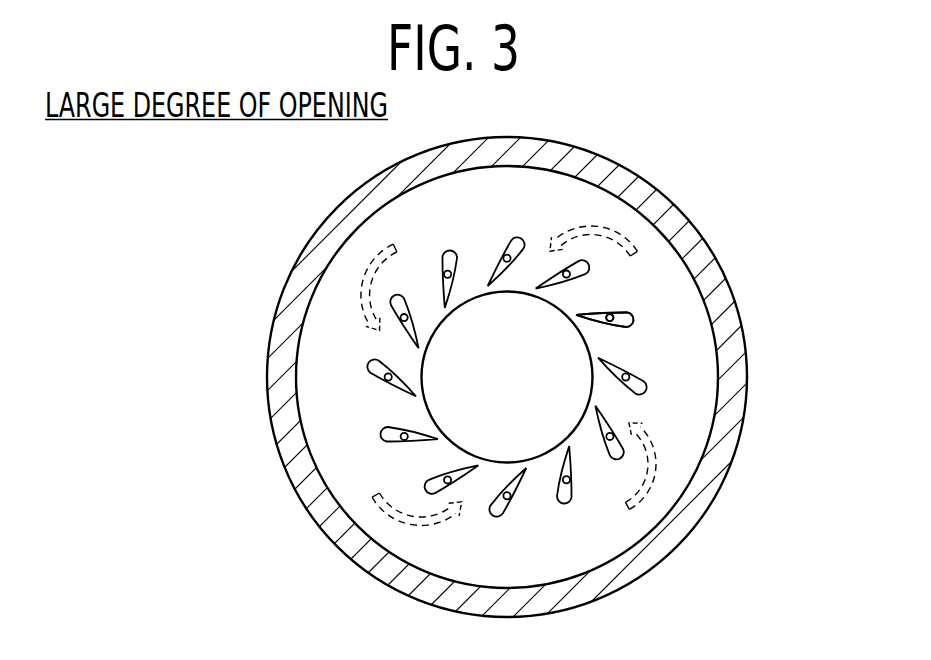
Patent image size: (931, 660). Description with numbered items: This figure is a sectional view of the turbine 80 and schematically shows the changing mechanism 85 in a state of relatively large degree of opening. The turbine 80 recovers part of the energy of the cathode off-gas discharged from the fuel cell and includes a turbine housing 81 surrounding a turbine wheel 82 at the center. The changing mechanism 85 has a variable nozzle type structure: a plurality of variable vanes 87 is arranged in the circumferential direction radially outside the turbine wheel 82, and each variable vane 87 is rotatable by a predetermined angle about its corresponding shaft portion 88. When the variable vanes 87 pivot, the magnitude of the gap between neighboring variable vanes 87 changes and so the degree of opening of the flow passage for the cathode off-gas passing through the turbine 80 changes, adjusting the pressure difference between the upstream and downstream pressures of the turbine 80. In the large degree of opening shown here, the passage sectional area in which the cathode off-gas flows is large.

The turbine 80 is at (516, 360).
The turbine housing 81 is at (322, 228).
The turbine wheel 82 is at (527, 413).
The changing mechanism 85 is at (357, 403).
The variable vane 87 is at (633, 322).
The shaft portion 88 is at (610, 314).